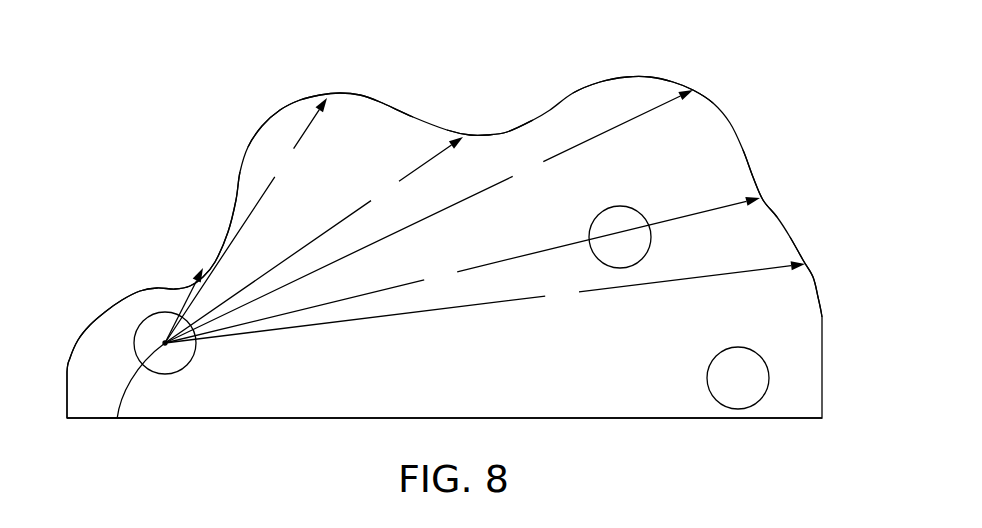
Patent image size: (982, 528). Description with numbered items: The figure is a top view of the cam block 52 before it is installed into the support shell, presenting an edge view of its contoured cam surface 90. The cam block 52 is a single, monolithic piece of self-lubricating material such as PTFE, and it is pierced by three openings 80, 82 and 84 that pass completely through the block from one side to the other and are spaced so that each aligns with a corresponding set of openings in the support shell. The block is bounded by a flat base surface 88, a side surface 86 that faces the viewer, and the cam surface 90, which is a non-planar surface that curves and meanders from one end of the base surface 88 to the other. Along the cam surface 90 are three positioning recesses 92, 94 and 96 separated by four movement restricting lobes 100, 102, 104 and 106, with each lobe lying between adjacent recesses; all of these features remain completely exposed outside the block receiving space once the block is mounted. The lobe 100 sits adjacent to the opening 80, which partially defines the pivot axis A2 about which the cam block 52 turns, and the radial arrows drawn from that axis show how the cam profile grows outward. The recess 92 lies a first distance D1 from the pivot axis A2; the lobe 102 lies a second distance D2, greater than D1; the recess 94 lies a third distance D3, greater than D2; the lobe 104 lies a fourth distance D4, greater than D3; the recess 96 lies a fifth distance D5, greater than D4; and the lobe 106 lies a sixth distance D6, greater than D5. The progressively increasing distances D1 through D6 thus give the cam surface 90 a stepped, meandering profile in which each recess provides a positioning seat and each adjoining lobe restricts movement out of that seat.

The cam block 52 is at (751, 79).
The opening 80 is at (191, 360).
The opening 82 is at (617, 267).
The opening 84 is at (733, 347).
The side surface 86 is at (325, 363).
The base surface 88 is at (158, 419).
The cam surface 90 is at (72, 360).
The positioning recess 92 is at (213, 256).
The positioning recess 94 is at (475, 133).
The positioning recess 96 is at (770, 200).
The movement restricting lobe 100 is at (115, 305).
The movement restricting lobe 102 is at (296, 103).
The movement restricting lobe 104 is at (628, 76).
The movement restricting lobe 106 is at (817, 278).
The first distance D1 is at (184, 299).
The second distance D2 is at (246, 220).
The third distance D3 is at (314, 240).
The fourth distance D4 is at (429, 216).
The fifth distance D5 is at (462, 270).
The sixth distance D6 is at (485, 302).
The pivot axis A2 is at (134, 401).